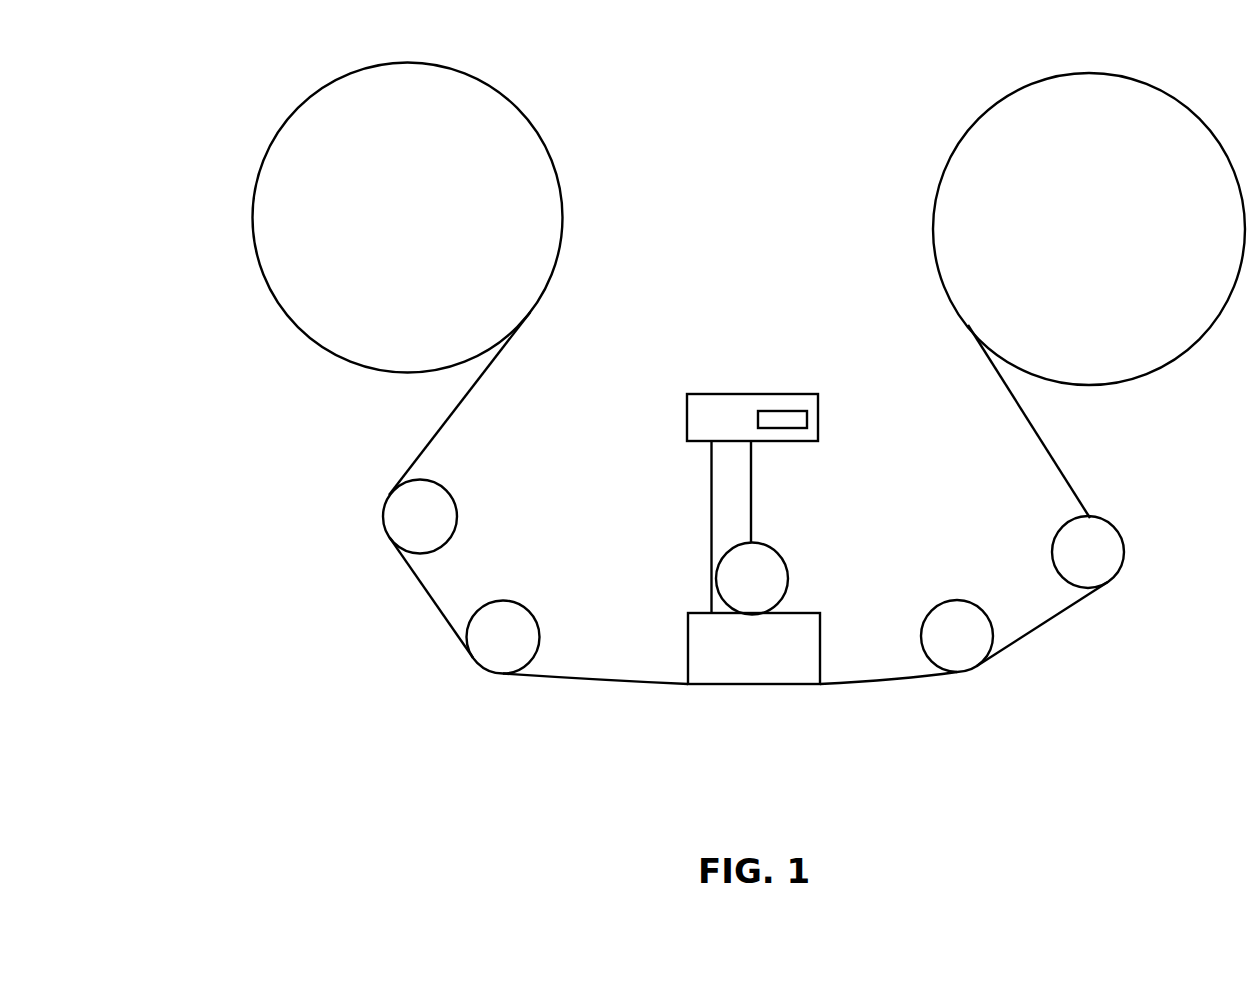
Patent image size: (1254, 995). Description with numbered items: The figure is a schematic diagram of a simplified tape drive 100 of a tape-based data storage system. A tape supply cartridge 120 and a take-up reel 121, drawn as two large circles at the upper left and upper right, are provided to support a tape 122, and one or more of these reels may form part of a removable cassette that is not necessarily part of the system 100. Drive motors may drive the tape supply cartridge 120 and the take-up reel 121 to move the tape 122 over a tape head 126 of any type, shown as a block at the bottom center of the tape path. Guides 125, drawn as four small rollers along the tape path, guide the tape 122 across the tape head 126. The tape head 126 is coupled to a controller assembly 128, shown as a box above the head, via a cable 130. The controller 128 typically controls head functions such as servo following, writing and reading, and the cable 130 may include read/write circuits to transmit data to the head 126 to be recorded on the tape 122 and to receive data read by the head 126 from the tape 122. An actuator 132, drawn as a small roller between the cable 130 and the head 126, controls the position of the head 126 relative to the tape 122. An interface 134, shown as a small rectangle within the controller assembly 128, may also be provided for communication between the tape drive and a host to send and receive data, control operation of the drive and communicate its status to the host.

The tape drive 100 is at (373, 443).
The tape supply cartridge 120 is at (562, 187).
The take-up reel 121 is at (1185, 353).
The tape 122 is at (600, 678).
The guides 125 is at (505, 600).
The tape head 126 is at (821, 648).
The controller assembly 128 is at (750, 394).
The cable 130 is at (709, 575).
The actuator 132 is at (773, 552).
The interface 134 is at (794, 410).